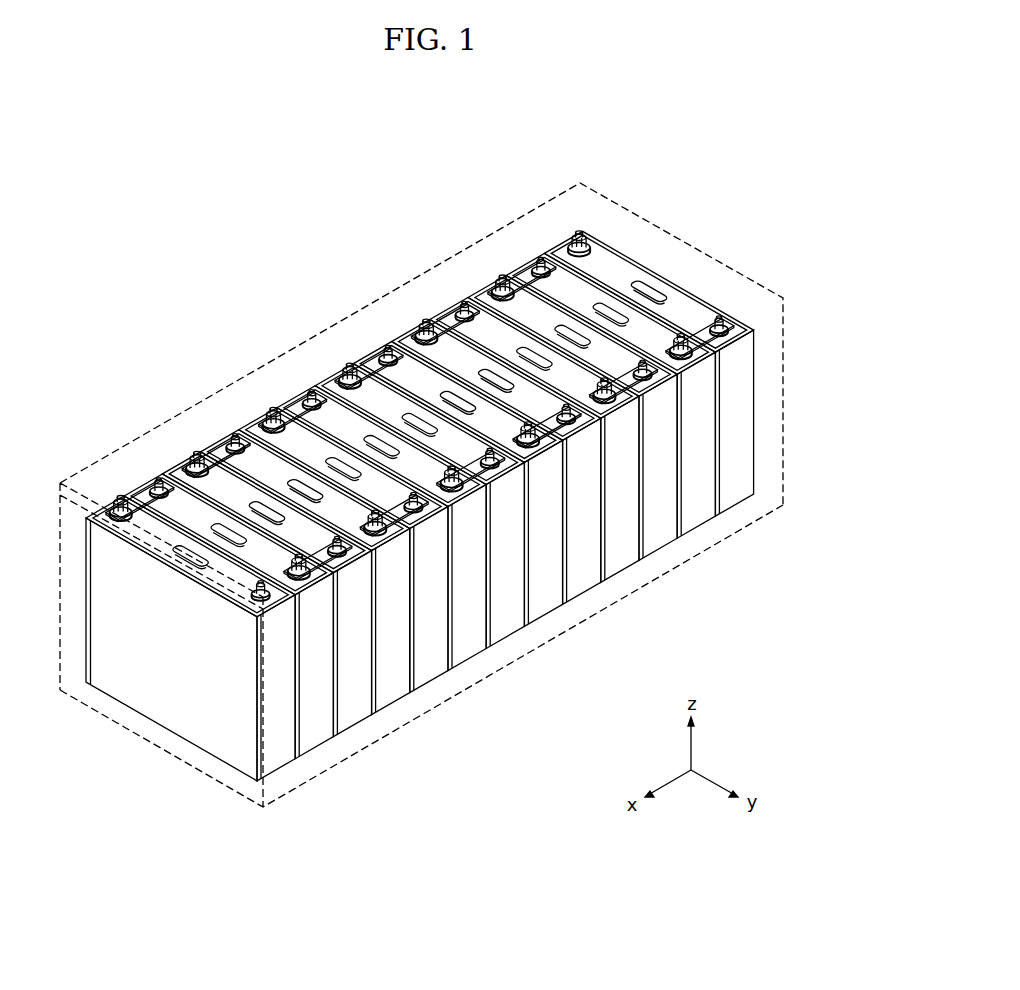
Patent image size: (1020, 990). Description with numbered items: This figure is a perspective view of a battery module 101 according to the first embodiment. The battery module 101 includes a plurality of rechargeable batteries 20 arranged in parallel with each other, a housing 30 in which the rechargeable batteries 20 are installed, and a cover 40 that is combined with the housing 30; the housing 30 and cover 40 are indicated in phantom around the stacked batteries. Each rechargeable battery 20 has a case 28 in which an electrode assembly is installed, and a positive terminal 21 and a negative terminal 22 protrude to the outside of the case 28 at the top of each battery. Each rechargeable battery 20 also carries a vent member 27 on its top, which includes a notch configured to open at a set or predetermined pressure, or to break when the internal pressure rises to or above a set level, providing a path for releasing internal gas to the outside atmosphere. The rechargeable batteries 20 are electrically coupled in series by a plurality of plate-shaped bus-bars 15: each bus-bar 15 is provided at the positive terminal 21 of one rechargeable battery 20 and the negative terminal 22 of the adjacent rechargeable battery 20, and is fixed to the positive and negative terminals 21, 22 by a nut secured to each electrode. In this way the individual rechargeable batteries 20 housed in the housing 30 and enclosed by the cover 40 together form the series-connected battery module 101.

The battery module 101 is at (420, 162).
The bus-bar 15 is at (217, 454).
The rechargeable battery 20 is at (420, 554).
The positive terminal 21 is at (118, 497).
The negative terminal 22 is at (157, 478).
The vent member 27 is at (335, 455).
The case 28 is at (277, 685).
The housing 30 is at (739, 535).
The cover 40 is at (660, 217).